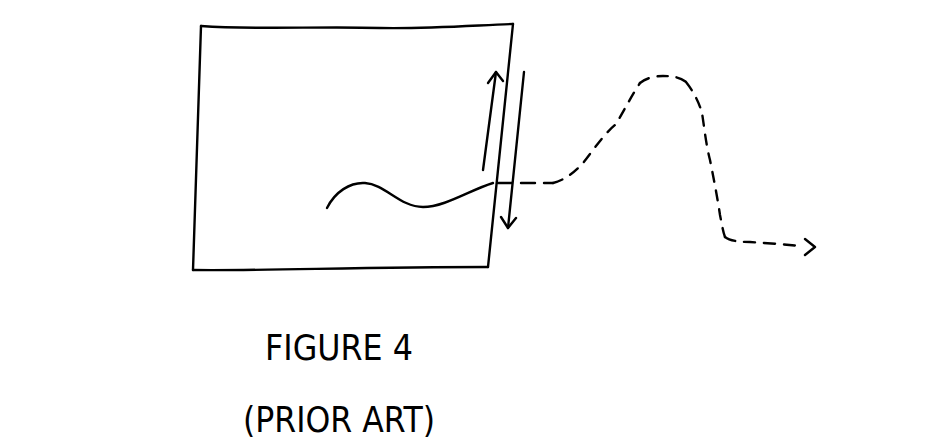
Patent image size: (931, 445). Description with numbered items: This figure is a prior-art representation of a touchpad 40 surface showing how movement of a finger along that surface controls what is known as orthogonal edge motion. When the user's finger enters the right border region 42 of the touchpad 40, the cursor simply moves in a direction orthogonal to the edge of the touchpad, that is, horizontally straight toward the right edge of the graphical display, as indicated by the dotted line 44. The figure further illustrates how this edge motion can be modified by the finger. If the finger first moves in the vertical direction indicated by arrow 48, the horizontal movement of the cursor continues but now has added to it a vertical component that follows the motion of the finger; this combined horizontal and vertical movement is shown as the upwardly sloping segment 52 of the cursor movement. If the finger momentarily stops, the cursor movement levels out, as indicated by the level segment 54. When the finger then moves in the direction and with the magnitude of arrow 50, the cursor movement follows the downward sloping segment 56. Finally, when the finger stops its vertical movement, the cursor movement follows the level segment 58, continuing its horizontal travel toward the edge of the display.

The touchpad 40 is at (223, 138).
The border region 42 is at (514, 28).
The dotted line 44 is at (538, 183).
The arrow 48 is at (487, 107).
The arrow 50 is at (515, 117).
The upwardly sloping segment 52 is at (597, 143).
The level segment 54 is at (667, 77).
The downward sloping segment 56 is at (710, 160).
The level segment 58 is at (763, 243).